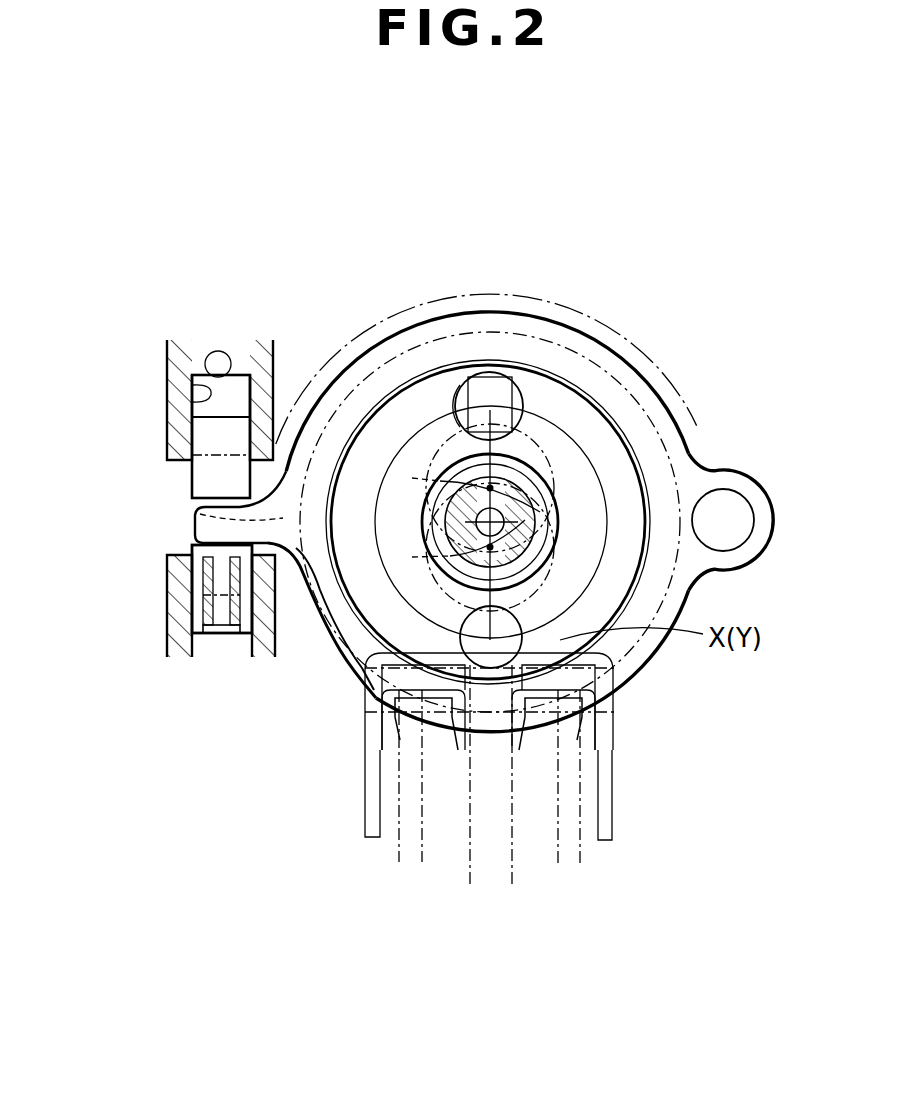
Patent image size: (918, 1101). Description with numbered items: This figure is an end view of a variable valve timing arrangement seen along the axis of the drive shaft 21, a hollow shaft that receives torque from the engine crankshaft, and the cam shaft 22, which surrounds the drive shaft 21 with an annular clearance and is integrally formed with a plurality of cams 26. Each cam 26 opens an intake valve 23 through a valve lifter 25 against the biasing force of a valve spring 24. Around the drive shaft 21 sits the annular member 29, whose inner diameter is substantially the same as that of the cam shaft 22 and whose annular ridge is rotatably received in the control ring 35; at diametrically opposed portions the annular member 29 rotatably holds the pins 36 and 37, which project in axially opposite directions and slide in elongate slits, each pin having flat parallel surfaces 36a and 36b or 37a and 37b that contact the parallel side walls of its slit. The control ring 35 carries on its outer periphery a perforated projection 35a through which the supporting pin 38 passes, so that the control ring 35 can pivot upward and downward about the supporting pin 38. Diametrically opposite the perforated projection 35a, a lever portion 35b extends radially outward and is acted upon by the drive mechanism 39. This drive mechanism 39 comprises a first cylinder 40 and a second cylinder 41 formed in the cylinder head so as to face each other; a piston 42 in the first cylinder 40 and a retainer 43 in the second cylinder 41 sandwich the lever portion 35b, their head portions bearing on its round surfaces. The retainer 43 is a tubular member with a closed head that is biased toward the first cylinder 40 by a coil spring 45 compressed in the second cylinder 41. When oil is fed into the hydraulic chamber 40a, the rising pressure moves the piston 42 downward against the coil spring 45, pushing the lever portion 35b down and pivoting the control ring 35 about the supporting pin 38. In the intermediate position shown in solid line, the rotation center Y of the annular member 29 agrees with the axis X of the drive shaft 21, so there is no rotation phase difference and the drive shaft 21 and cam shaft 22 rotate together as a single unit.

The drive shaft 21 is at (517, 490).
The cam shaft 22 is at (597, 650).
The intake valve 23 is at (513, 858).
The valve spring 24 is at (580, 788).
The valve lifter 25 is at (614, 747).
The cam 26 is at (500, 333).
The annular member 29 is at (550, 623).
The control ring 35 is at (673, 423).
The perforated projection 35a is at (727, 477).
The lever portion 35b is at (197, 513).
The pin 36 is at (500, 382).
The flat parallel surface 36a is at (505, 385).
The flat parallel surface 36b is at (455, 400).
The pin 37 is at (460, 640).
The flat parallel surface 37a is at (625, 663).
The flat parallel surface 37b is at (367, 693).
The supporting pin 38 is at (745, 525).
The drive mechanism 39 is at (190, 351).
The first cylinder 40 is at (192, 397).
The hydraulic chamber 40a is at (244, 372).
The second cylinder 41 is at (200, 613).
The piston 42 is at (208, 436).
The retainer 43 is at (197, 570).
The coil spring 45 is at (207, 637).